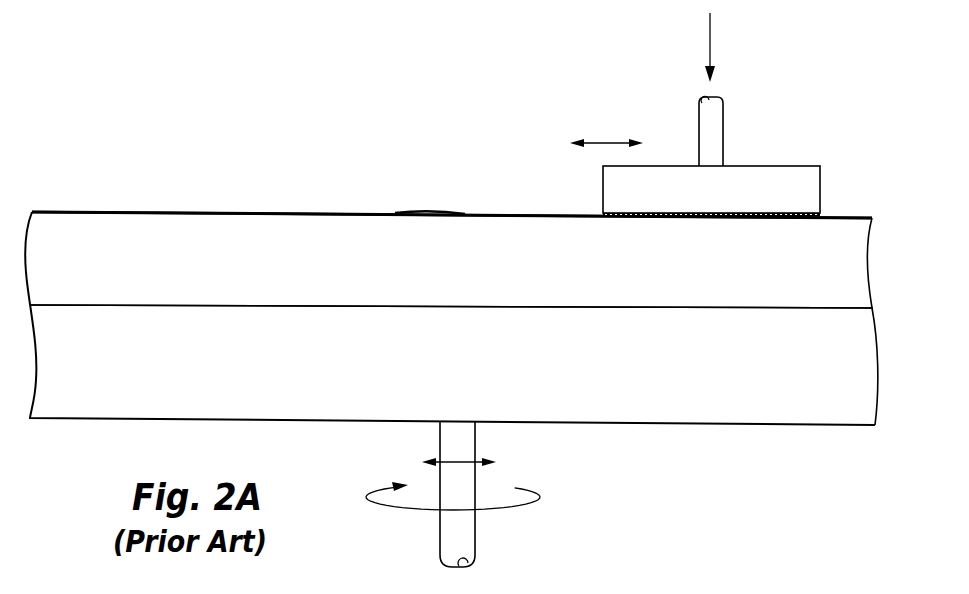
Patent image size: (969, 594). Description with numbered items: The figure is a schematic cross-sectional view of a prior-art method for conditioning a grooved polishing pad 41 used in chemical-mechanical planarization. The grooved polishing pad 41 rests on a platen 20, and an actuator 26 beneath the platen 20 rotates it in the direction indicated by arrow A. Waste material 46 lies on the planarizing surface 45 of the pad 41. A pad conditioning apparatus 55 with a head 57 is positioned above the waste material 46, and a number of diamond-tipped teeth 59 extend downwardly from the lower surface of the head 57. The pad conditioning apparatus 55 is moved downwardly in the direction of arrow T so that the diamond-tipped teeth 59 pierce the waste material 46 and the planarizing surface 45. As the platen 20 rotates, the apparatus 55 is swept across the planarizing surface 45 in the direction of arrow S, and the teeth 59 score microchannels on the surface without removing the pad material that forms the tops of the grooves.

The platen 20 is at (462, 380).
The grooved polishing pad 41 is at (474, 288).
The planarizing surface 45 is at (872, 218).
The waste material 46 is at (104, 212).
The pad conditioning apparatus 55 is at (750, 139).
The head 57 is at (724, 200).
The diamond-tipped teeth 59 is at (822, 214).
The actuator 26 is at (508, 443).